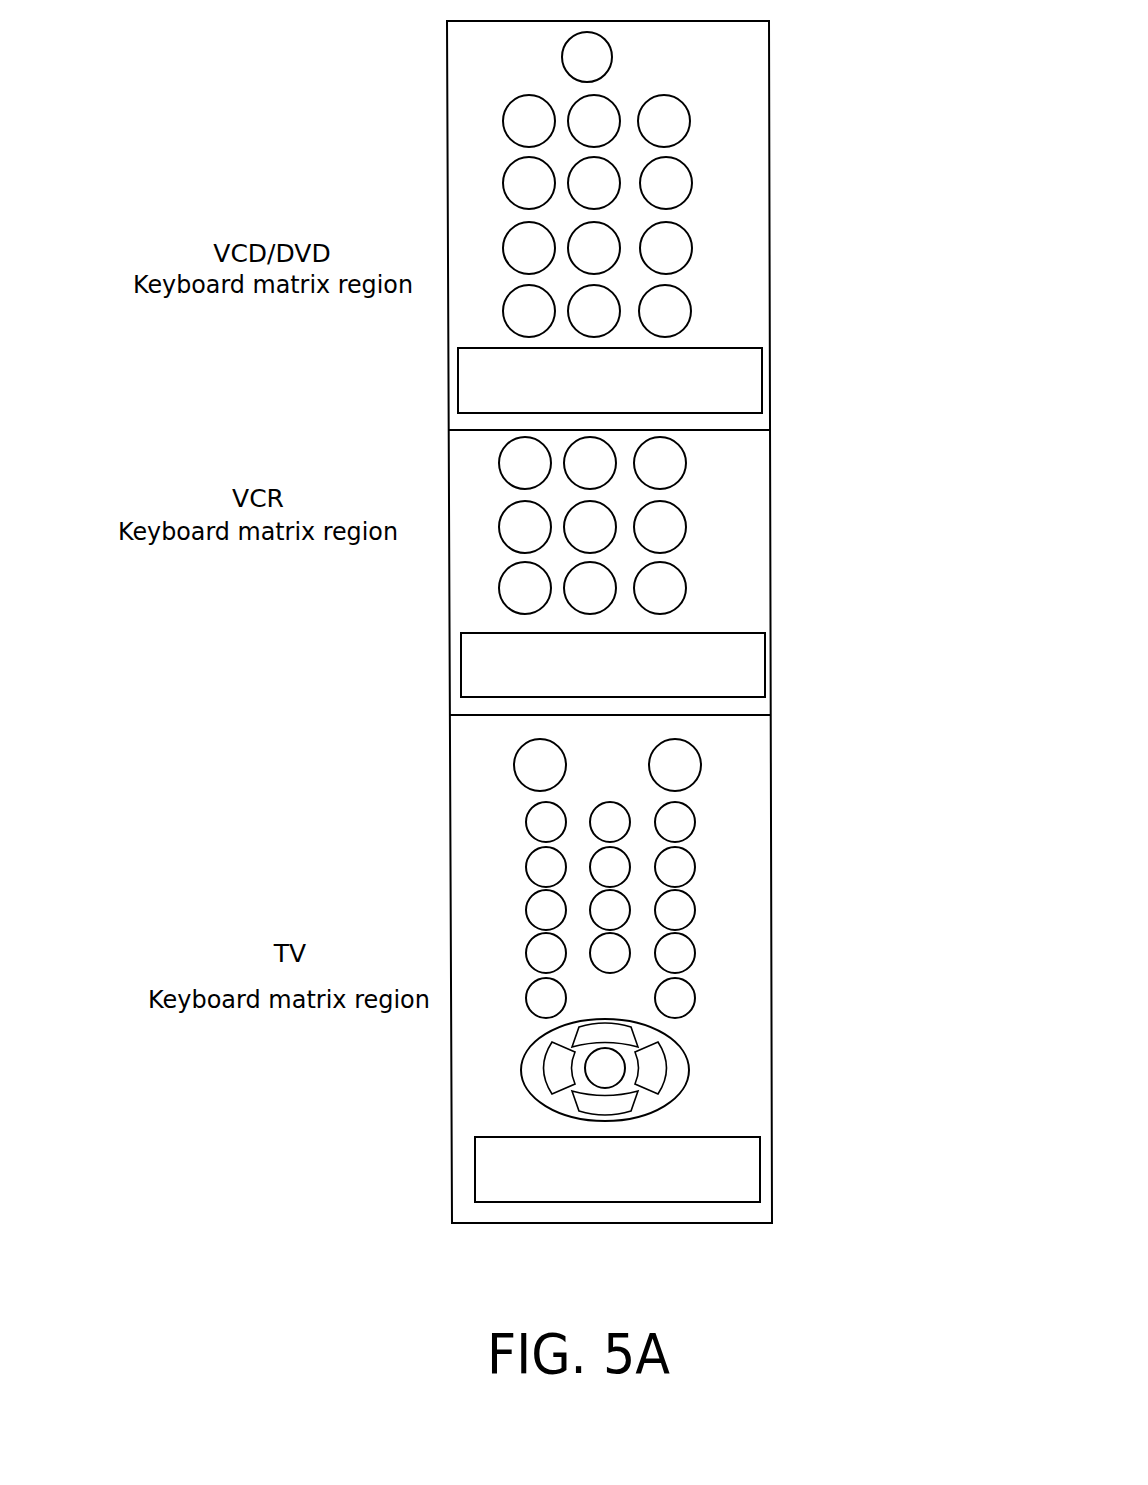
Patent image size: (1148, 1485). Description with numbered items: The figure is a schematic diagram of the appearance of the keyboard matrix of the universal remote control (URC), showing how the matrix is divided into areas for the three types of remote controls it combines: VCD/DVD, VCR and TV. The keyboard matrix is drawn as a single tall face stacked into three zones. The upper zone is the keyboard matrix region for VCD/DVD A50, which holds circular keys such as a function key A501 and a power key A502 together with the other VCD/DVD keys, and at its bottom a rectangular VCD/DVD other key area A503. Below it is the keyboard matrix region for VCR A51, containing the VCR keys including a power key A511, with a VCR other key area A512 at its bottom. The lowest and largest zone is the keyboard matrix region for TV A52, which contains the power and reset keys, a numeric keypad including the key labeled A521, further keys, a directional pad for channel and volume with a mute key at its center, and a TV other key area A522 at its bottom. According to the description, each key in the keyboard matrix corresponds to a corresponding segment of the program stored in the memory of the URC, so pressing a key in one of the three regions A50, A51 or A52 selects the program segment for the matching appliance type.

The keyboard matrix region for VCD/DVD A50 is at (666, 222).
The function key (FUN) A501 is at (593, 68).
The power key (POW) of VCD/DVD region A502 is at (670, 137).
The VCD/DVD other key area A503 is at (678, 355).
The keyboard matrix region for VCR A51 is at (659, 567).
The power key (POW) of VCR region A511 is at (667, 475).
The VCR other key area A512 is at (680, 638).
The keyboard matrix region for TV A52 is at (671, 970).
The number key 5 of TV region A521 is at (685, 822).
The TV other key area A522 is at (675, 1143).